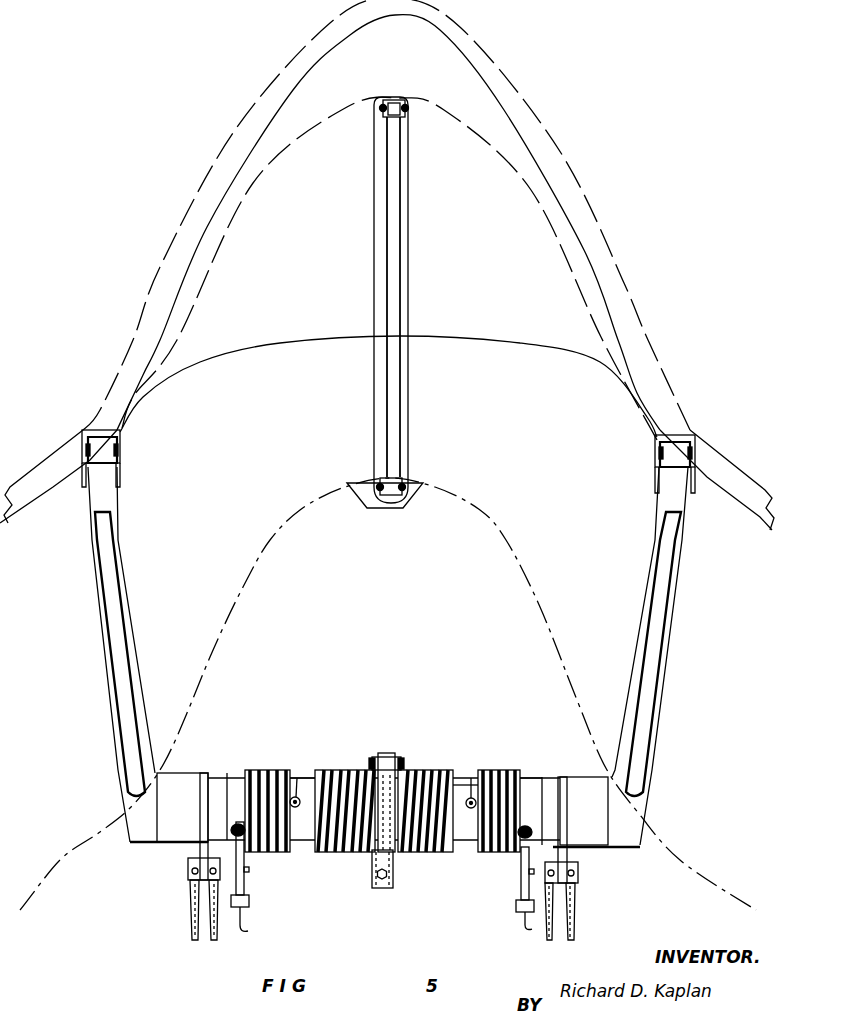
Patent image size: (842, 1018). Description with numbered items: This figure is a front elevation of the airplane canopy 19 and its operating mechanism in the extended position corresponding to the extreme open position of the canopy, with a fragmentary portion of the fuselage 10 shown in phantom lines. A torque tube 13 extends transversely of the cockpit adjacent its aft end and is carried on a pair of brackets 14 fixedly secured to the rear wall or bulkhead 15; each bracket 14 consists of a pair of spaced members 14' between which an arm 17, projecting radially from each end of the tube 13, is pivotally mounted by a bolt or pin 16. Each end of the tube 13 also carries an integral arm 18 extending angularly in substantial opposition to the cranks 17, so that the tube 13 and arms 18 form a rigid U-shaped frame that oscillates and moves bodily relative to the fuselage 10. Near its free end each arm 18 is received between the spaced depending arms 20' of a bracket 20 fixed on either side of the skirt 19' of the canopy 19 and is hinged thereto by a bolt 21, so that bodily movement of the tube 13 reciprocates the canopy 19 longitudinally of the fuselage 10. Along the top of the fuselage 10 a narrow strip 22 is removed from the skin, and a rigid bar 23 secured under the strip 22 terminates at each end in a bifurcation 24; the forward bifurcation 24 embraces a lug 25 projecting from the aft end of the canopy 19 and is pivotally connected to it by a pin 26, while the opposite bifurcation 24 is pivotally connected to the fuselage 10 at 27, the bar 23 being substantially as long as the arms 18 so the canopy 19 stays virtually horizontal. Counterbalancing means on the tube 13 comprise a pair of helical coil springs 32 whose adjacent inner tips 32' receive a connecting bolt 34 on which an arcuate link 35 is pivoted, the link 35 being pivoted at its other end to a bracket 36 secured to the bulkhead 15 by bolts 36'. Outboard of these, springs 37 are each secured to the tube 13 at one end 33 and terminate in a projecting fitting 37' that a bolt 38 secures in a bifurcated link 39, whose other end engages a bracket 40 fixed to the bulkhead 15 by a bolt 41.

The airplane fuselage 10 is at (62, 860).
The torque tube 13 is at (460, 784).
The brackets 14 is at (378, 910).
The spaced members 14' is at (367, 923).
The rear wall or bulkhead 15 is at (432, 910).
The bolt or pin 16 is at (191, 871).
The arm 17 is at (204, 850).
The arm 18 is at (110, 682).
The canopy 19 is at (386, 220).
The frame or skirt 19' is at (387, 479).
The brackets 20 is at (388, 442).
The depending arms 20' is at (388, 489).
The bolts 21 is at (118, 452).
The strip 22 is at (406, 258).
The rigid bar 23 is at (388, 289).
The bifurcation 24 is at (386, 124).
The lug 25 is at (406, 112).
The pin 26 is at (380, 110).
The pivotal connection 27 is at (404, 483).
The helical coil springs 32 is at (384, 795).
The tips 32' is at (405, 745).
The end 33 is at (297, 795).
The connecting bolt 34 is at (394, 768).
The arcuate link 35 is at (388, 756).
The bracket 36 is at (367, 877).
The bolts 36' is at (404, 872).
The springs 37 is at (387, 795).
The projecting fitting 37' is at (389, 790).
The bolt 38 is at (234, 828).
The link 39 is at (527, 872).
The bracket 40 is at (522, 925).
The bolt 41 is at (517, 905).